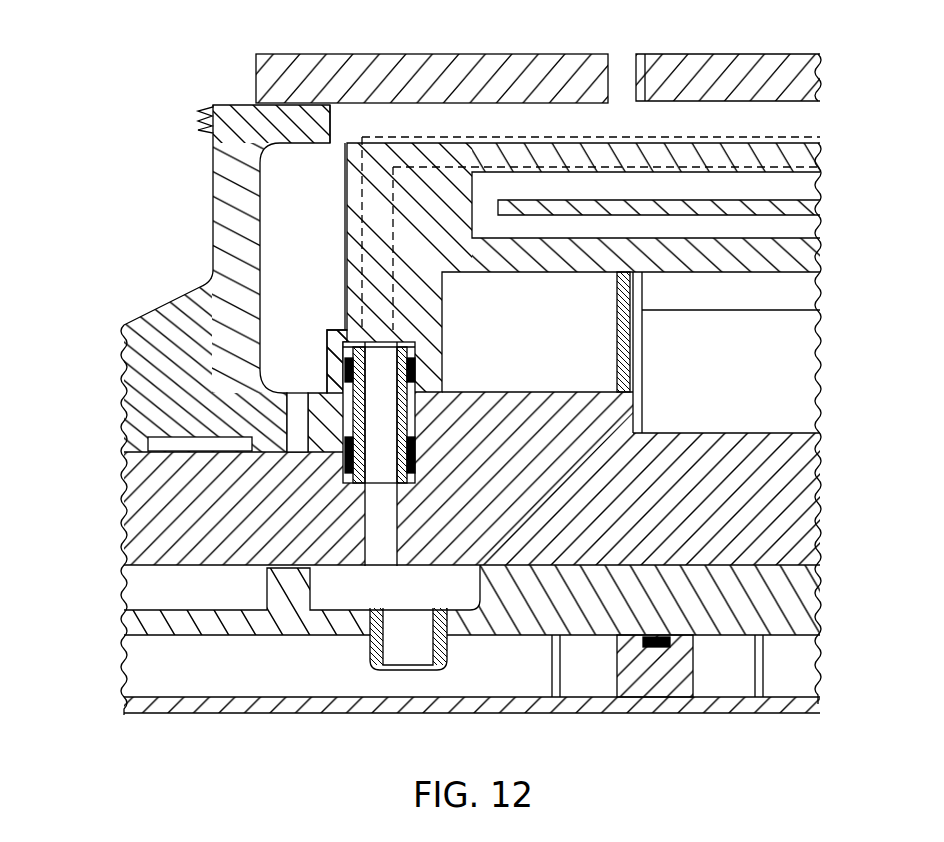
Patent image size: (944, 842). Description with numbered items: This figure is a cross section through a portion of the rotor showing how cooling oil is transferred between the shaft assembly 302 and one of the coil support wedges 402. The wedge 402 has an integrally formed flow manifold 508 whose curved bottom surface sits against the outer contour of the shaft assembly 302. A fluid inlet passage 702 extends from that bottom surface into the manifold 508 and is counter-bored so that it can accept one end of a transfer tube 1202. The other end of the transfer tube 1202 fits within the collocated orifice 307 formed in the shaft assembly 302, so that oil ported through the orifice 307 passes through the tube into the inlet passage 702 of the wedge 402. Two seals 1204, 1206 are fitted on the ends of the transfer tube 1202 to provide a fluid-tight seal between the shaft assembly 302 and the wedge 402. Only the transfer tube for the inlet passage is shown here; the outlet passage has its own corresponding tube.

The coil support wedge 402 is at (840, 120).
The flow manifold 508 is at (345, 263).
The fluid inlet passage 702 is at (330, 348).
The orifice 307 is at (308, 415).
The shaft assembly 302 is at (106, 438).
The transfer tube 1202 is at (410, 342).
The seal 1204 is at (413, 378).
The seal 1206 is at (413, 373).